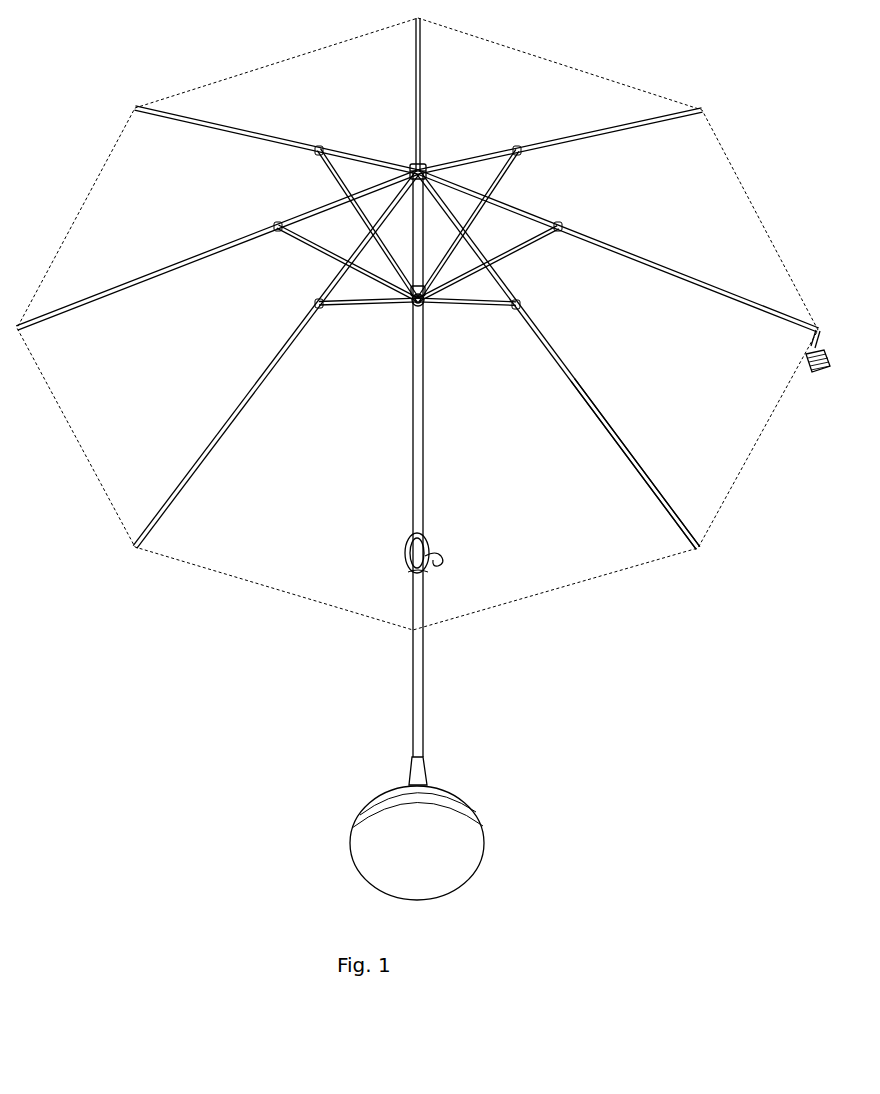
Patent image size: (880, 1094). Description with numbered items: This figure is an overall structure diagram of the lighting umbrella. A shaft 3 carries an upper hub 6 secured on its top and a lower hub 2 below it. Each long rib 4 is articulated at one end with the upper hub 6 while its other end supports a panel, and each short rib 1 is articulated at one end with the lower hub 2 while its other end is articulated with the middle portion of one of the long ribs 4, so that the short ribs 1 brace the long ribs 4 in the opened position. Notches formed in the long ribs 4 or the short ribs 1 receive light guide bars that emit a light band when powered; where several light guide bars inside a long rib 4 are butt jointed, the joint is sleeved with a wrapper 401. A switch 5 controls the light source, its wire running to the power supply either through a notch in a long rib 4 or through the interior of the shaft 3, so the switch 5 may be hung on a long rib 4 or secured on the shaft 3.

The short rib 1 is at (347, 310).
The lower hub 2 is at (407, 306).
The shaft 3 is at (412, 462).
The long rib 4 is at (573, 379).
The wrapper 401 is at (608, 428).
The switch 5 is at (816, 376).
The upper hub 6 is at (427, 166).